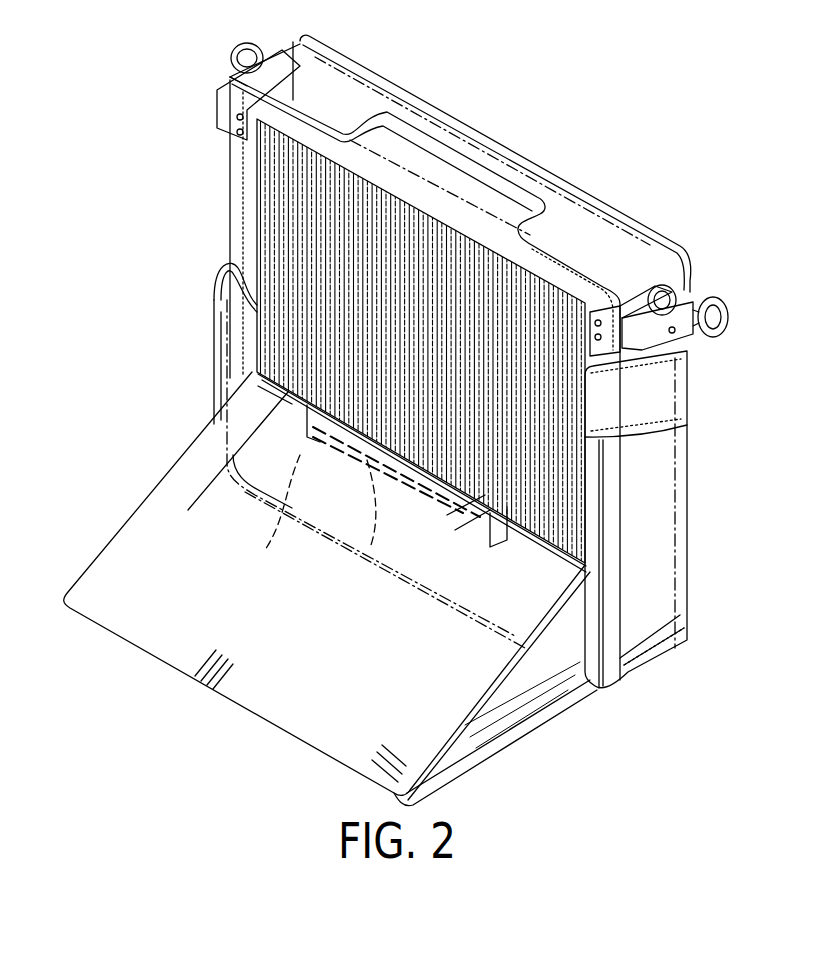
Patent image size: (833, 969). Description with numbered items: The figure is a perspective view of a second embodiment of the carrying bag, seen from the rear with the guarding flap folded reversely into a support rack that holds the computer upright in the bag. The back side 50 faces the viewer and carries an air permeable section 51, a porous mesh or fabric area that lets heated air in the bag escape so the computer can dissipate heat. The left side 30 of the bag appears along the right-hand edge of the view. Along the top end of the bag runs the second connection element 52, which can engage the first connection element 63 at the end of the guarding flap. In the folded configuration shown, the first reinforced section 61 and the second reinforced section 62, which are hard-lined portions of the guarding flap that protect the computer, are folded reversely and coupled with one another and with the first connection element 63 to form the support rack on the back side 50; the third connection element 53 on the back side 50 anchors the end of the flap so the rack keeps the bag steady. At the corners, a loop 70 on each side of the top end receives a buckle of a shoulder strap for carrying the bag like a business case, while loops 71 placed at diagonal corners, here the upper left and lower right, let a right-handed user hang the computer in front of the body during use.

The left side 30 is at (663, 403).
The back side 50 is at (246, 192).
The air permeable section 51 is at (237, 307).
The second connection element 52 is at (477, 165).
The third connection element 53 is at (400, 566).
The first reinforced section 61 is at (543, 680).
The second reinforced section 62 is at (163, 510).
The first connection element 63 is at (285, 540).
The loop 70 is at (240, 48).
The loop 71 is at (722, 297).